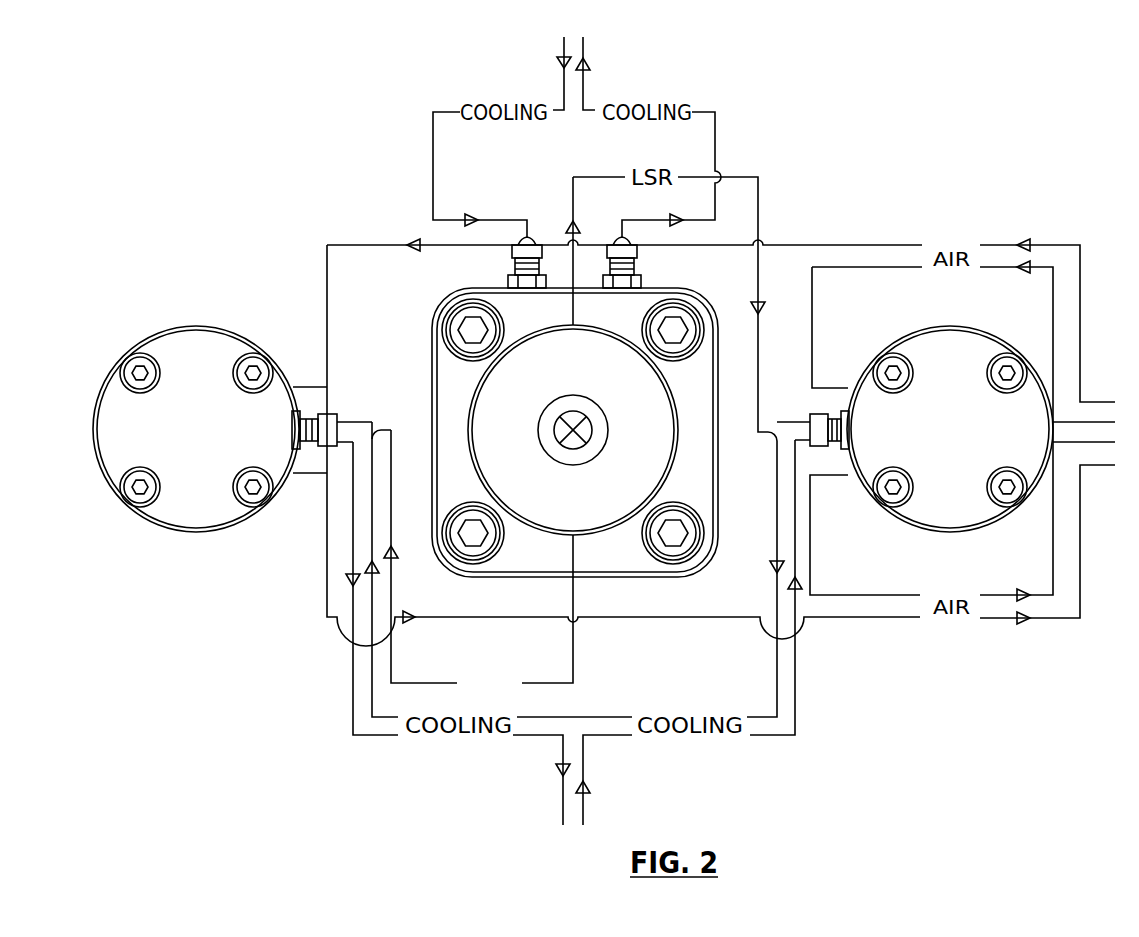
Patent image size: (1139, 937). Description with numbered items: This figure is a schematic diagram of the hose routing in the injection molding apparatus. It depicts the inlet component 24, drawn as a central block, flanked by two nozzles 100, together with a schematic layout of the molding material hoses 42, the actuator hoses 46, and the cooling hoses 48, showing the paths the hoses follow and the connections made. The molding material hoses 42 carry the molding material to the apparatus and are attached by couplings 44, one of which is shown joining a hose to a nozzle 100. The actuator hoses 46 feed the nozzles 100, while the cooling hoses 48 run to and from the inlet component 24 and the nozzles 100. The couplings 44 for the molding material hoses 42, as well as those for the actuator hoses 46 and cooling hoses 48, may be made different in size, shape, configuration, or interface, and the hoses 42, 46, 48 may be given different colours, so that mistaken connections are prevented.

The nozzle 100 is at (170, 312).
The inlet component 24 is at (613, 496).
The coupling 44 is at (329, 411).
The actuator hose 46 is at (853, 244).
The molding material hose 42 is at (573, 647).
The cooling hose 48 is at (796, 688).